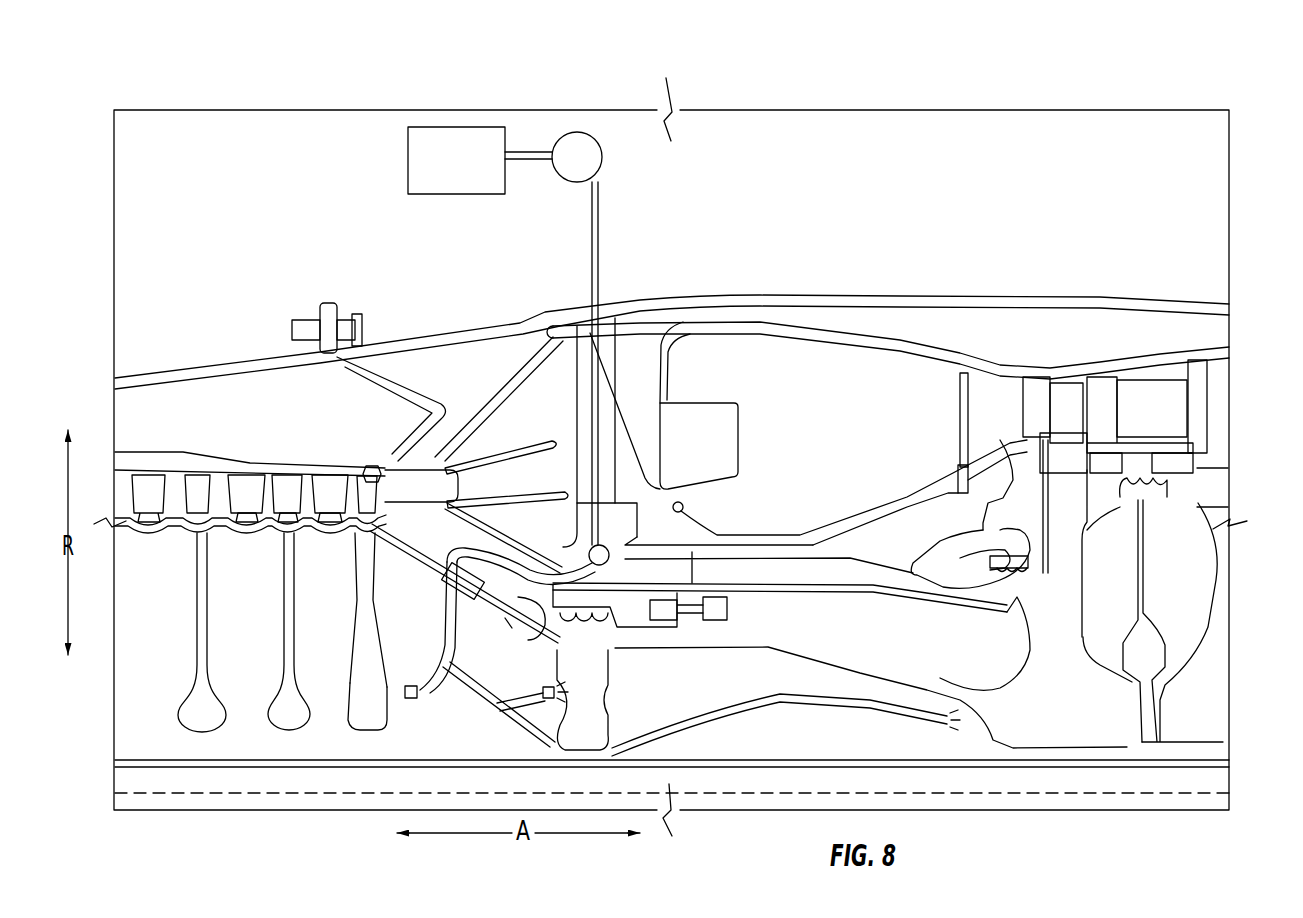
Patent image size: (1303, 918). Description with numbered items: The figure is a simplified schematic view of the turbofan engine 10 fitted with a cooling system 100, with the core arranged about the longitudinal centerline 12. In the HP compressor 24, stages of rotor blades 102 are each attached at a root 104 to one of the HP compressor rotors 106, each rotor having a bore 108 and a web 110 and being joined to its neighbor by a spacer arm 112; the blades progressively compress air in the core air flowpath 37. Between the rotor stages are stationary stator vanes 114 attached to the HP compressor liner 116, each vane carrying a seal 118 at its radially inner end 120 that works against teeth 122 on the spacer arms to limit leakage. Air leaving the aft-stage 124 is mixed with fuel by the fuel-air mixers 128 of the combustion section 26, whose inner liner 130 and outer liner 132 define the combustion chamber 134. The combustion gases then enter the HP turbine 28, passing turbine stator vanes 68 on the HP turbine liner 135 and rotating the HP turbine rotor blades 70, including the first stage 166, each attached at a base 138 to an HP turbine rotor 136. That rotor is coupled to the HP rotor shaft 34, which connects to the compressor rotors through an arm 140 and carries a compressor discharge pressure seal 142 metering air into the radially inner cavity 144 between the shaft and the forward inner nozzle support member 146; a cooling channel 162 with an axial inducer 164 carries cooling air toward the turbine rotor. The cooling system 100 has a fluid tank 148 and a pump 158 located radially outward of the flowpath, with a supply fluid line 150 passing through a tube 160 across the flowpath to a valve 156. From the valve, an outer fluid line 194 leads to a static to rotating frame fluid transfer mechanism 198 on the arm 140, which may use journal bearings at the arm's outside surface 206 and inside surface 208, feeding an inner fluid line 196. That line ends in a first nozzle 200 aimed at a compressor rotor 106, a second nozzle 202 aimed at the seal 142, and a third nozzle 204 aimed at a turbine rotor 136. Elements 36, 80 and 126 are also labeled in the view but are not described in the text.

The turbofan engine 10 is at (222, 82).
The longitudinal centerline 12 is at (1198, 793).
The HP compressor 24 is at (165, 405).
The combustion section 26 is at (800, 350).
The HP turbine 28 is at (1200, 333).
The HP rotor shaft 34 is at (768, 647).
The low pressure shaft 36 is at (737, 757).
The core air flowpath 37 is at (220, 478).
The turbine stator vanes 68 is at (1158, 387).
The HP turbine rotor blades 70 is at (1065, 397).
The casing junction 80 is at (365, 437).
The cooling system 100 is at (655, 190).
The rotor blades 102 is at (282, 490).
The root 104 is at (193, 525).
The HP compressor rotors 106 is at (345, 733).
The bore 108 is at (378, 708).
The web 110 is at (367, 608).
The spacer arm 112 is at (255, 528).
The stator vanes 114 is at (248, 493).
The HP compressor liner 116 is at (330, 472).
The seal 118 is at (245, 530).
The radially inner end 120 is at (158, 522).
The teeth 122 is at (330, 527).
The aft-stage 124 is at (400, 405).
The vane 126 is at (470, 455).
The fuel-air mixers 128 is at (650, 420).
The inner liner 130 is at (800, 535).
The outer liner 132 is at (897, 345).
The combustion chamber 134 is at (834, 421).
The HP turbine liner 135 is at (982, 367).
The HP turbine rotor 136 is at (1057, 713).
The base 138 is at (1073, 460).
The arm 140 is at (458, 524).
The compressor discharge pressure seal 142 is at (613, 710).
The radially inner cavity 144 is at (926, 648).
The forward inner nozzle support member 146 is at (960, 612).
The fluid tank 148 is at (469, 170).
The supply fluid line 150 is at (592, 266).
The valve 156 is at (608, 549).
The pump 158 is at (590, 152).
The tube 160 is at (577, 392).
The cooling channel 162 is at (840, 560).
The axial inducer 164 is at (1005, 618).
The first stage 166 is at (1040, 380).
The outer fluid line 194 is at (523, 560).
The inner fluid line 196 is at (527, 735).
The static to rotating frame fluid transfer mechanism 198 is at (443, 583).
The first nozzle 200 is at (415, 697).
The second nozzle 202 is at (548, 700).
The third nozzle 204 is at (948, 725).
The outside surface 206 is at (518, 597).
The inside surface 208 is at (537, 598).